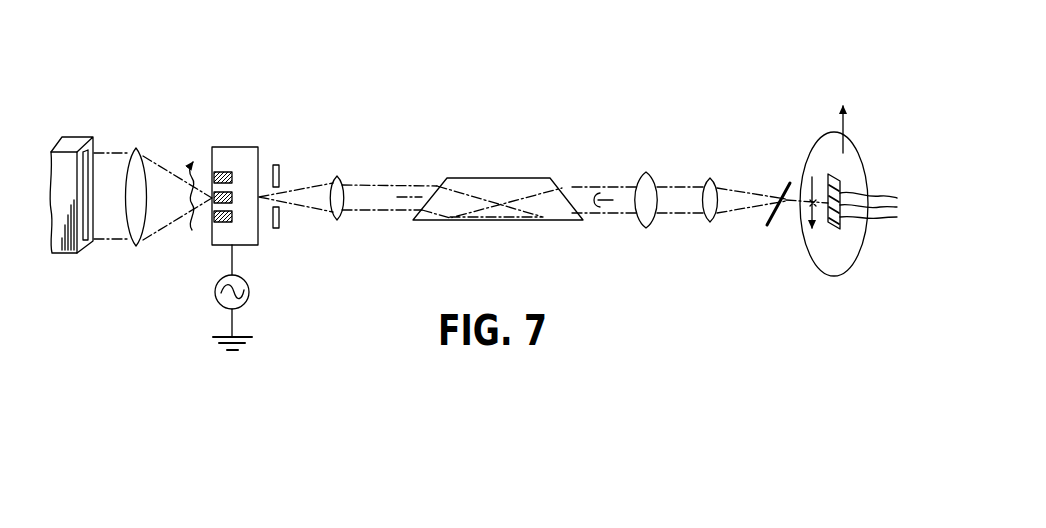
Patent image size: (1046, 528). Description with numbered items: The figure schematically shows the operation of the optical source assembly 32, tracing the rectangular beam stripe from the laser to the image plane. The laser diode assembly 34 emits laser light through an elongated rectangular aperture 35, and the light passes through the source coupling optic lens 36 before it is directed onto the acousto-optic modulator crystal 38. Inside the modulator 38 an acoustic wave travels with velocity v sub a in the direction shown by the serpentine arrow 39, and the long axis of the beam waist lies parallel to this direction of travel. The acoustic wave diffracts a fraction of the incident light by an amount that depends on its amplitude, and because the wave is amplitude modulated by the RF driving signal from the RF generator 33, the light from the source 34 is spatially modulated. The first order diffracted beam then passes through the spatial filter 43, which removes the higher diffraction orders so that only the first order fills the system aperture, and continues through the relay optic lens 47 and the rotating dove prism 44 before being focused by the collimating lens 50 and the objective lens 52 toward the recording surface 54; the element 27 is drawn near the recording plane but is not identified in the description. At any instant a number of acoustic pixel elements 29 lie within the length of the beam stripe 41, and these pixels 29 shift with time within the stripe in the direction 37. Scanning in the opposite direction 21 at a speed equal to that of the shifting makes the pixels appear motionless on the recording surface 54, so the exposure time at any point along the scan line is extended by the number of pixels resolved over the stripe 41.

The scanning direction 21 is at (763, 221).
The rotation direction arrow 27 is at (807, 184).
The acoustic pixel elements 29 is at (887, 207).
The optical source assembly 32 is at (390, 122).
The RF generator 33 is at (249, 292).
The laser diode assembly 34 is at (73, 139).
The elongated rectangular aperture 35 is at (86, 212).
The source coupling optic lens 36 is at (127, 228).
The shift direction 37 is at (846, 122).
The acousto-optic modulator crystal 38 is at (228, 147).
The serpentine arrow 39 is at (191, 166).
The beam stripe 41 is at (840, 173).
The spatial filter 43 is at (282, 178).
The dove prism 44 is at (487, 178).
The relay optic lens 47 is at (345, 213).
The collimating lens 50 is at (642, 228).
The objective lens 52 is at (707, 221).
The recording surface 54 is at (852, 248).